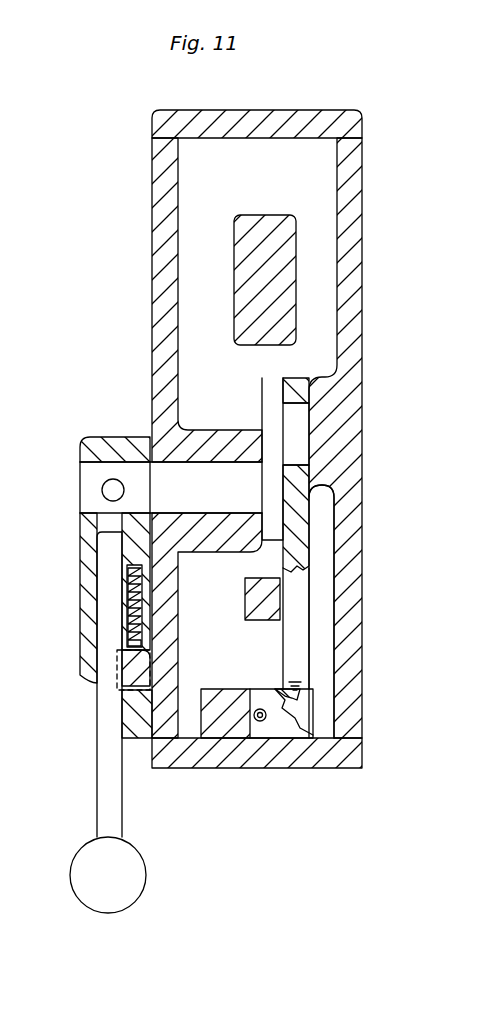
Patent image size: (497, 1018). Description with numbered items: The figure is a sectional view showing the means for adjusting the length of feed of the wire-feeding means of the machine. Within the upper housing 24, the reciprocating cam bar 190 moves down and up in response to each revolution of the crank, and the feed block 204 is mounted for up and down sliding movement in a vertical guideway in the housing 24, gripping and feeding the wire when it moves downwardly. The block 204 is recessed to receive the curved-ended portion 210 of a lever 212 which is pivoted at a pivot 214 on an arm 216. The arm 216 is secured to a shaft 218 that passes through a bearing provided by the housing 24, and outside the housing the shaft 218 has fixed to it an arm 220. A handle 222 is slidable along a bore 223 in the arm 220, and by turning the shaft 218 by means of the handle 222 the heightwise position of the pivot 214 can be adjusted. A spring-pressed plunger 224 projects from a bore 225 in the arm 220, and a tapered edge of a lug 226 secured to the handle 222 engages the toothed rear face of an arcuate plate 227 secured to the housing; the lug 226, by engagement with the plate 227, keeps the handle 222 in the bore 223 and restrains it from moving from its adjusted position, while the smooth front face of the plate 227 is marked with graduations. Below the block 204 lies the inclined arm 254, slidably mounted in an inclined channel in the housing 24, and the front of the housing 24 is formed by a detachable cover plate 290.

The upper housing 24 is at (363, 272).
The cam bar 190 is at (271, 214).
The feed block 204 is at (275, 728).
The curved-ended portion 210 is at (310, 557).
The lever 212 is at (300, 655).
The pivot 214 is at (284, 400).
The arm 216 is at (262, 423).
The shaft 218 is at (228, 502).
The arm 220 is at (108, 437).
The handle 222 is at (97, 776).
The bore 223 is at (95, 522).
The spring-pressed plunger 224 is at (148, 632).
The bore 225 is at (140, 590).
The lug 226 is at (150, 668).
The arcuate plate 227 is at (143, 745).
The inclined arm 254 is at (262, 622).
The cover plate 290 is at (205, 770).